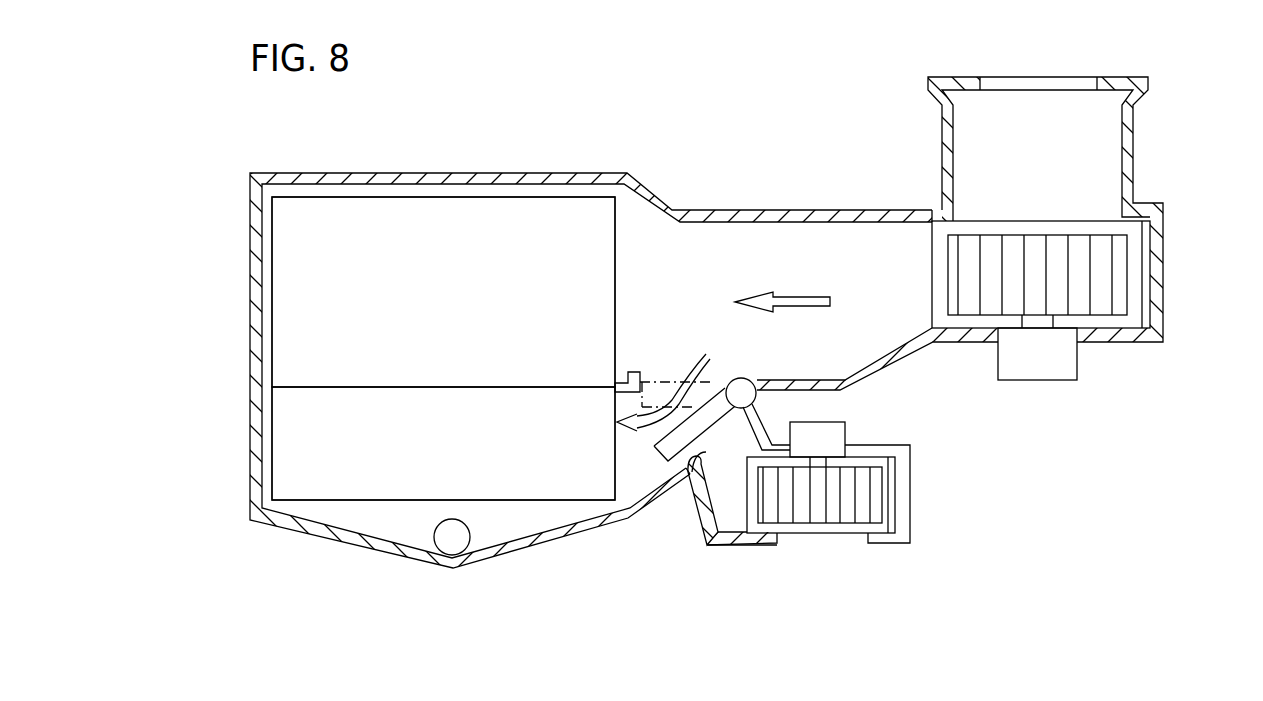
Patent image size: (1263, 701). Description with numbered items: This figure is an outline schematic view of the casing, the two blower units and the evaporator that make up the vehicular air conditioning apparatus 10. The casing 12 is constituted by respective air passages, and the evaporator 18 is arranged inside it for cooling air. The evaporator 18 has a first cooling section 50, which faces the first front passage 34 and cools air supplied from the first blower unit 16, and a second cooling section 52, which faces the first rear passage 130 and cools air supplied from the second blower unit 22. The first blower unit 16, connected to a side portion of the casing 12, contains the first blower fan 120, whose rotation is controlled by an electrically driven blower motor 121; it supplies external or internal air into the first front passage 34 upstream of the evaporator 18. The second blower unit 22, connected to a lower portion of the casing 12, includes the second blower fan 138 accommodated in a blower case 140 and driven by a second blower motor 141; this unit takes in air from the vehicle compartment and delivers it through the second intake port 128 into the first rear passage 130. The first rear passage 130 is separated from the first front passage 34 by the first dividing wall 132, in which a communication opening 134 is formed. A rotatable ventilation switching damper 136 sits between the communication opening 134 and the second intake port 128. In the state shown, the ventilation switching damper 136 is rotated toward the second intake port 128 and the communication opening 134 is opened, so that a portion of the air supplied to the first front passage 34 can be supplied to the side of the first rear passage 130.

The vehicular air conditioning apparatus 10 is at (841, 97).
The casing 12 is at (505, 172).
The first blower unit 16 is at (1170, 264).
The evaporator 18 is at (359, 193).
The second blower unit 22 is at (768, 560).
The first front passage 34 is at (795, 250).
The first cooling section 50 is at (297, 257).
The second cooling section 52 is at (298, 422).
The first blower fan 120 is at (1032, 243).
The blower motor 121 is at (1035, 372).
The second intake port 128 is at (706, 520).
The first rear passage 130 is at (626, 484).
The first dividing wall 132 is at (808, 388).
The communication opening 134 is at (643, 382).
The ventilation switching damper 136 is at (707, 433).
The second blower fan 138 is at (812, 510).
The blower case 140 is at (894, 538).
The second blower motor 141 is at (822, 425).